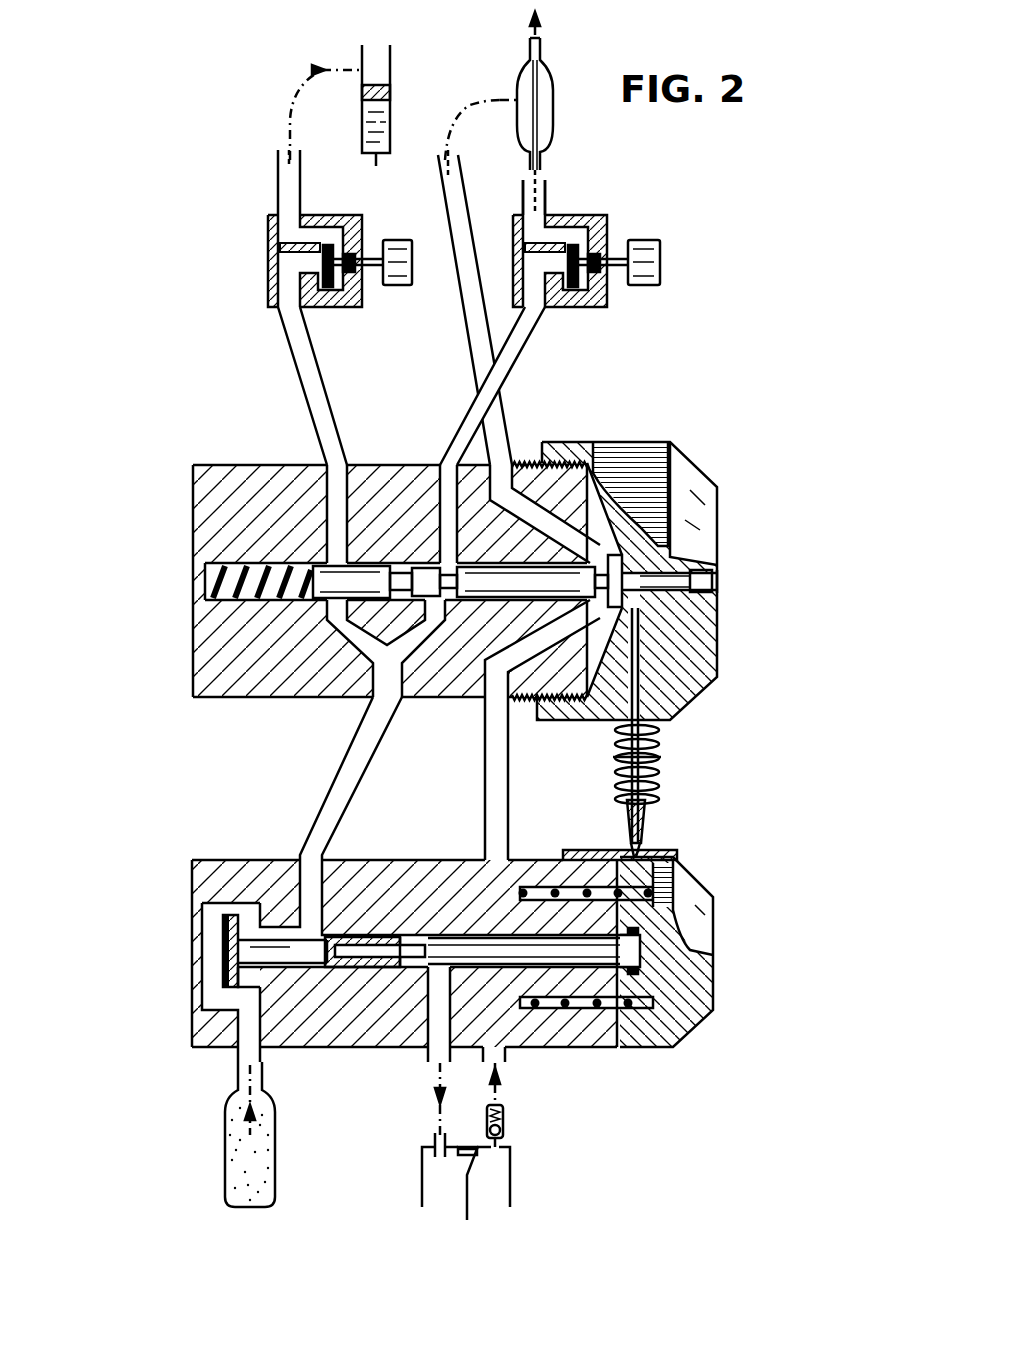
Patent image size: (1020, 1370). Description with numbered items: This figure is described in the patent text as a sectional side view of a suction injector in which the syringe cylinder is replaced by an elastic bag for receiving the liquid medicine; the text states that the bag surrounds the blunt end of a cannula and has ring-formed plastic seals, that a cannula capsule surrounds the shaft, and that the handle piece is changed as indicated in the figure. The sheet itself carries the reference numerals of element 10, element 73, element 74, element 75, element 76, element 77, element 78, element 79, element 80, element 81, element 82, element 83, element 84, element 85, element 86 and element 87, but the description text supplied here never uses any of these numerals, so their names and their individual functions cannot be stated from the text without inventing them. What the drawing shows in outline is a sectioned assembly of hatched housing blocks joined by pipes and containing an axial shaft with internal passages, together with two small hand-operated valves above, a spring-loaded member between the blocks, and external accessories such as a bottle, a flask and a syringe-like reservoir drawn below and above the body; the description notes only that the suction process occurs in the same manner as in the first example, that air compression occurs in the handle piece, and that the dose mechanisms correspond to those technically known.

The valve body block 10 is at (265, 878).
The lower valve housing 73 is at (563, 1030).
The diaphragm plate 74 is at (223, 985).
The piston rod 76 is at (302, 952).
The valve shaft 77 is at (510, 950).
The spring 78 is at (580, 1010).
The outlet pipe 79 is at (438, 1077).
The end cap 75 is at (692, 922).
The gas inlet pipe 80 is at (453, 162).
The threaded cap nut 81 is at (700, 517).
The spool valve shaft 82 is at (475, 625).
The needle valve 83 is at (600, 300).
The inlet pipe 84 is at (548, 183).
The channel 85 is at (355, 637).
The needle valve 86 is at (350, 300).
The sample inlet line 87 is at (290, 103).